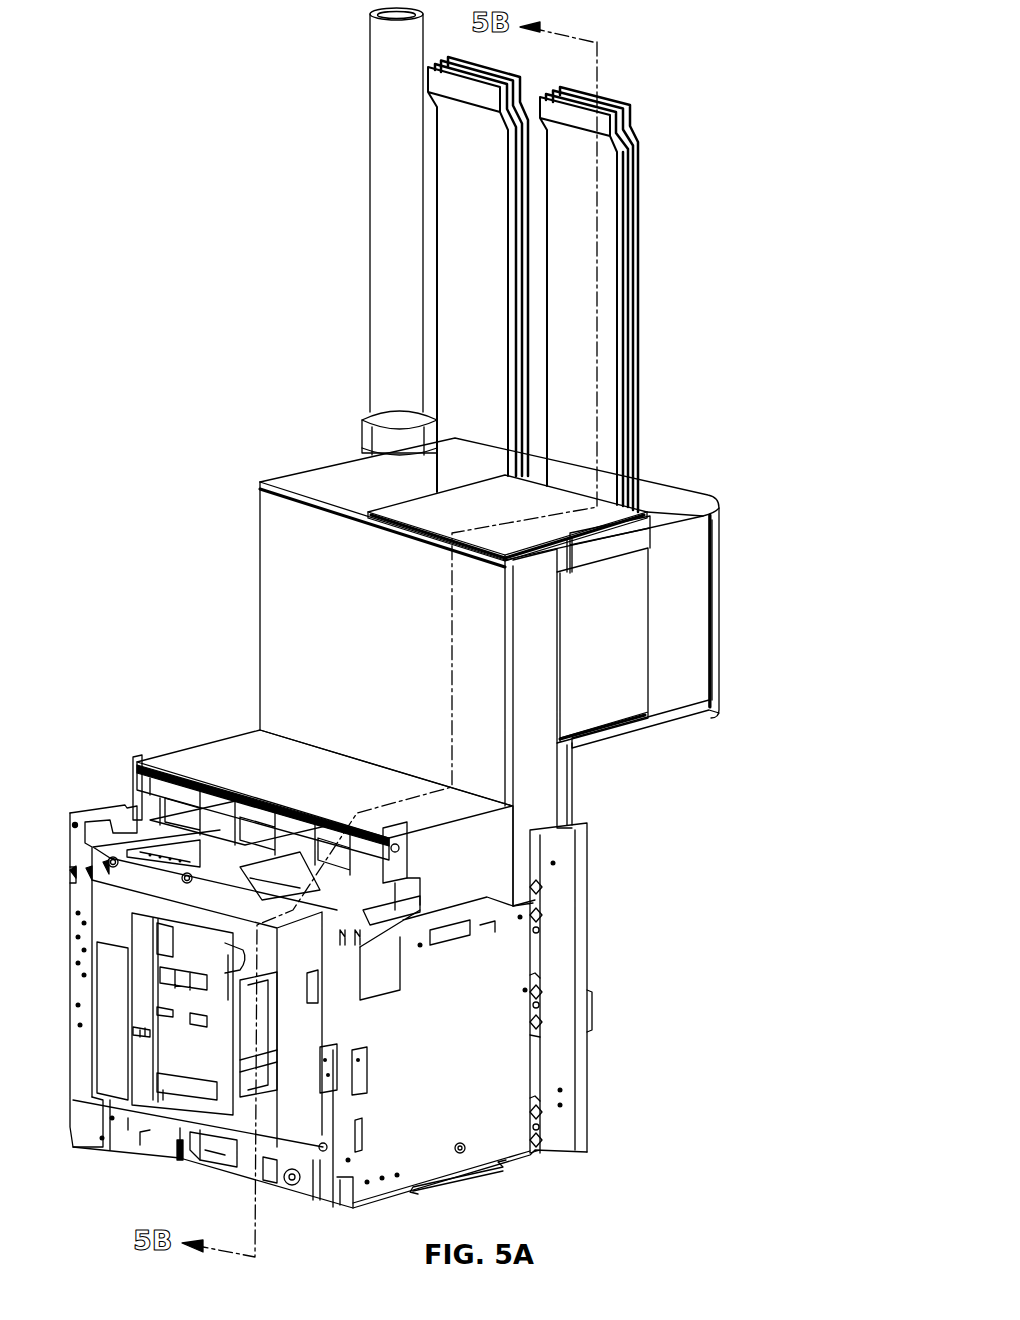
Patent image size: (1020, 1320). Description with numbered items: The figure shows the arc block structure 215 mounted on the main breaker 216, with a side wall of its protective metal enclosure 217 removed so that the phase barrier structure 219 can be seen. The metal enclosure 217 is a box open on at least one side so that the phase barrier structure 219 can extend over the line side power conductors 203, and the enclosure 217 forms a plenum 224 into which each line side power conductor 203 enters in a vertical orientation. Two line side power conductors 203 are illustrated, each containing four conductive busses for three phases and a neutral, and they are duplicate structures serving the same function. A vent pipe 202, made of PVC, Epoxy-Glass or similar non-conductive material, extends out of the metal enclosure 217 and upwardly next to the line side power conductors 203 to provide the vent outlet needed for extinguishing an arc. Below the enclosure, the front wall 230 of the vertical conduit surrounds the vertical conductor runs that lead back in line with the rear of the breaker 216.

The vent pipe 202 is at (397, 101).
The line side power conductor 203 is at (458, 163).
The arc block structure 215 is at (683, 743).
The main breaker 216 is at (180, 1063).
The protective metal enclosure 217 is at (715, 538).
The phase barrier structure 219 is at (625, 642).
The plenum 224 is at (697, 600).
The front wall 230 is at (330, 664).